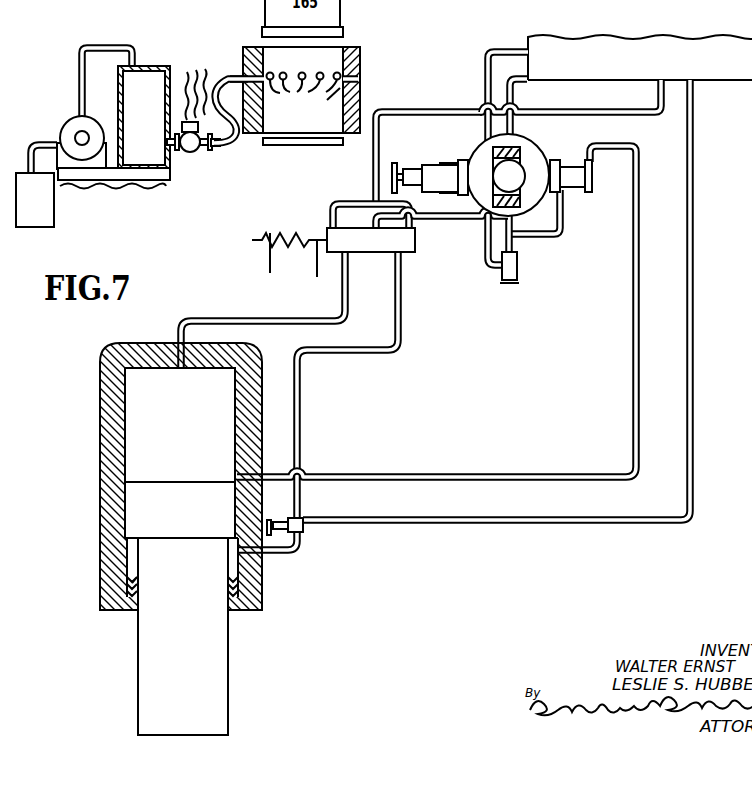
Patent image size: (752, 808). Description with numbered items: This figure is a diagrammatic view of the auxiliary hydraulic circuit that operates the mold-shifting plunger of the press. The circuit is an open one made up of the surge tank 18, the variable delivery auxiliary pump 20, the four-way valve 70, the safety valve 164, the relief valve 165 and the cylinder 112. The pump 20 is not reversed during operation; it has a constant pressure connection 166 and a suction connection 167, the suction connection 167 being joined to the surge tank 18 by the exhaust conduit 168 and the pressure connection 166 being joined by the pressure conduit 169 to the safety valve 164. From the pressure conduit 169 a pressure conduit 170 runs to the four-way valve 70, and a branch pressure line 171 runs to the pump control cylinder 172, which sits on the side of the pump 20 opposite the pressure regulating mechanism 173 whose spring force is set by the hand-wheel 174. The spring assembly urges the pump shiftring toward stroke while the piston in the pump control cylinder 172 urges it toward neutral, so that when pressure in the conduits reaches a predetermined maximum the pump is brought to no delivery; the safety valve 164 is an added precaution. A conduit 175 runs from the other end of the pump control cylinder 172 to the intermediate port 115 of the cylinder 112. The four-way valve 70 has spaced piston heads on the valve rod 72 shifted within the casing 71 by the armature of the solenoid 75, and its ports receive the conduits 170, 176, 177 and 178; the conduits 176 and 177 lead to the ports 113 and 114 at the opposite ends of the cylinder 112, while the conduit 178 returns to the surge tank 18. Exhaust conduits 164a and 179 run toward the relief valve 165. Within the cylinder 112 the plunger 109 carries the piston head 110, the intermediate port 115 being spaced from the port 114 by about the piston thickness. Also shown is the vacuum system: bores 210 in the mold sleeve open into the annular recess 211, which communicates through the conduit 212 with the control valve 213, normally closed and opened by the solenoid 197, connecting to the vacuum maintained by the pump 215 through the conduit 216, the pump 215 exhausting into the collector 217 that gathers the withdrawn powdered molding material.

The surge tank 18 is at (528, 40).
The variable delivery auxiliary pump 20 is at (478, 152).
The four-way valve 70 is at (370, 250).
The casing 71 is at (336, 252).
The valve rod 72 is at (253, 240).
The solenoid 75 is at (287, 247).
The plunger 109 is at (197, 635).
The piston head 110 is at (202, 524).
The cylinder 112 is at (100, 380).
The port 113 is at (179, 366).
The port 114 is at (233, 551).
The intermediate port 115 is at (238, 478).
The safety valve 164 is at (505, 282).
The exhaust conduit 164a is at (486, 65).
The relief valve 165 is at (304, 530).
The pressure connection 166 is at (518, 205).
The suction connection 167 is at (515, 150).
The exhaust conduit 168 is at (514, 97).
The pressure conduit 169 is at (505, 238).
The pressure conduit 170 is at (442, 224).
The branch pressure line 171 is at (566, 232).
The pump control cylinder 172 is at (577, 183).
The pressure regulating mechanism 173 is at (409, 168).
The hand-wheel 174 is at (392, 172).
The conduit 175 is at (633, 332).
The conduit 176 is at (348, 292).
The conduit 177 is at (402, 286).
The conduit 178 is at (646, 116).
The exhaust conduit 179 is at (490, 517).
The solenoid 197 is at (229, 152).
The bores 210 is at (304, 89).
The annular recess 211 is at (333, 92).
The conduit 212 is at (221, 73).
The control valve 213 is at (191, 153).
The pump 215 is at (68, 132).
The conduit 216 is at (96, 46).
The collector 217 is at (55, 212).